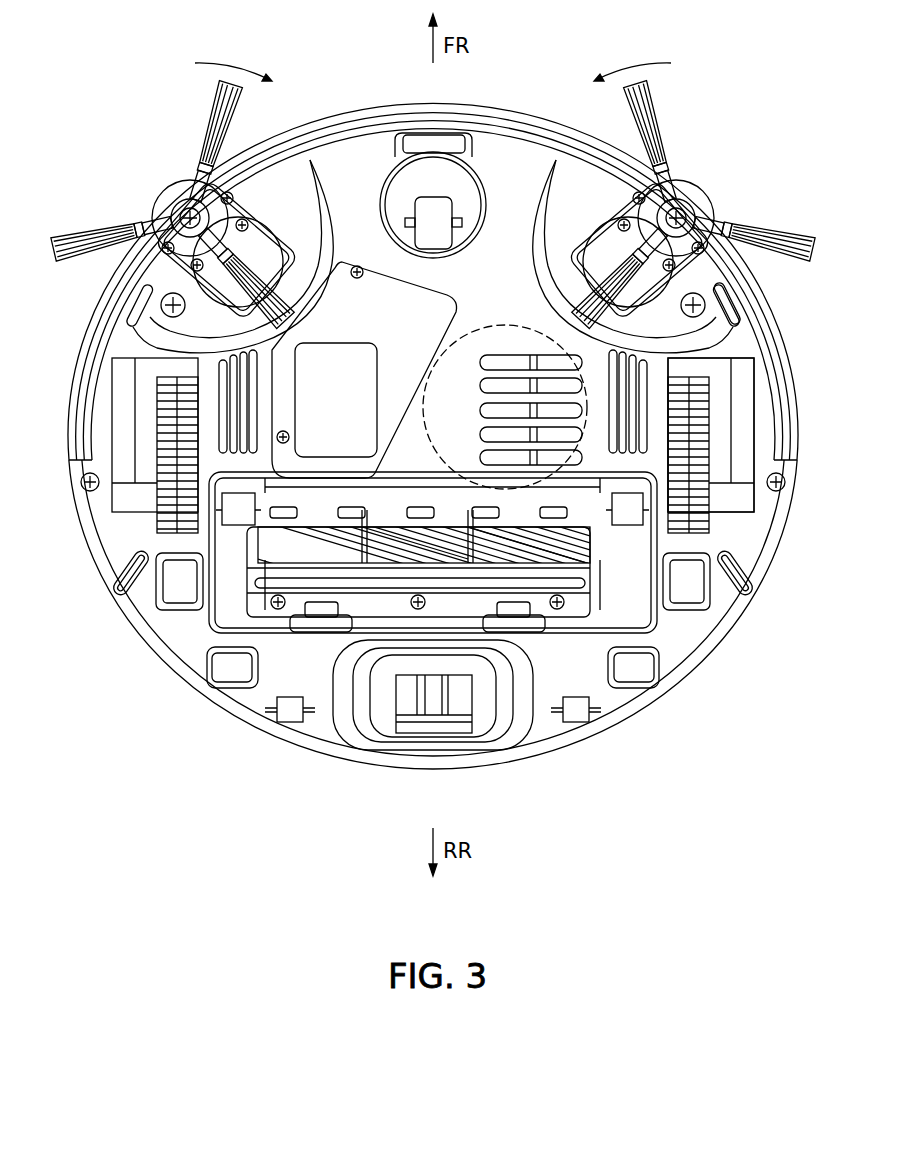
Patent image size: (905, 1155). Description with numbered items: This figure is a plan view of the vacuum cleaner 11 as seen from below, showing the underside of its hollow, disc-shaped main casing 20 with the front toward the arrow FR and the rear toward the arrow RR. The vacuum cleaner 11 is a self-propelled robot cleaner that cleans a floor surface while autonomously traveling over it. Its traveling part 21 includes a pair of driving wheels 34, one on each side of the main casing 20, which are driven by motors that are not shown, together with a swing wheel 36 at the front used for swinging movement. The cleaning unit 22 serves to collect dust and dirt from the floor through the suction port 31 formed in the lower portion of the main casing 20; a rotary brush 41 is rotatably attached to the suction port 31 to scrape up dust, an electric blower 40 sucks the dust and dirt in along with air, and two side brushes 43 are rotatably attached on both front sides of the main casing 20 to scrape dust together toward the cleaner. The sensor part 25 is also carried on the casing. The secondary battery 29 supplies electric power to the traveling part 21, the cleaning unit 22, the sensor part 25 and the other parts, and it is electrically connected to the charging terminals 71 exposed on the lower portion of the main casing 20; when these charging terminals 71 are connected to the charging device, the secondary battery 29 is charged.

The vacuum cleaner 11 is at (574, 60).
The main casing 20 is at (511, 107).
The side brushes 43 is at (129, 157).
The sensor part 25 is at (740, 304).
The swing wheel 36 is at (444, 240).
The secondary battery 29 is at (360, 265).
The electric blower 40 is at (495, 330).
The driving wheels 34 is at (165, 397).
The traveling part 21 is at (720, 443).
The cleaning unit 22 is at (590, 546).
The rotary brush 41 is at (296, 545).
The charging terminals 71 is at (237, 672).
The suction port 31 is at (457, 555).